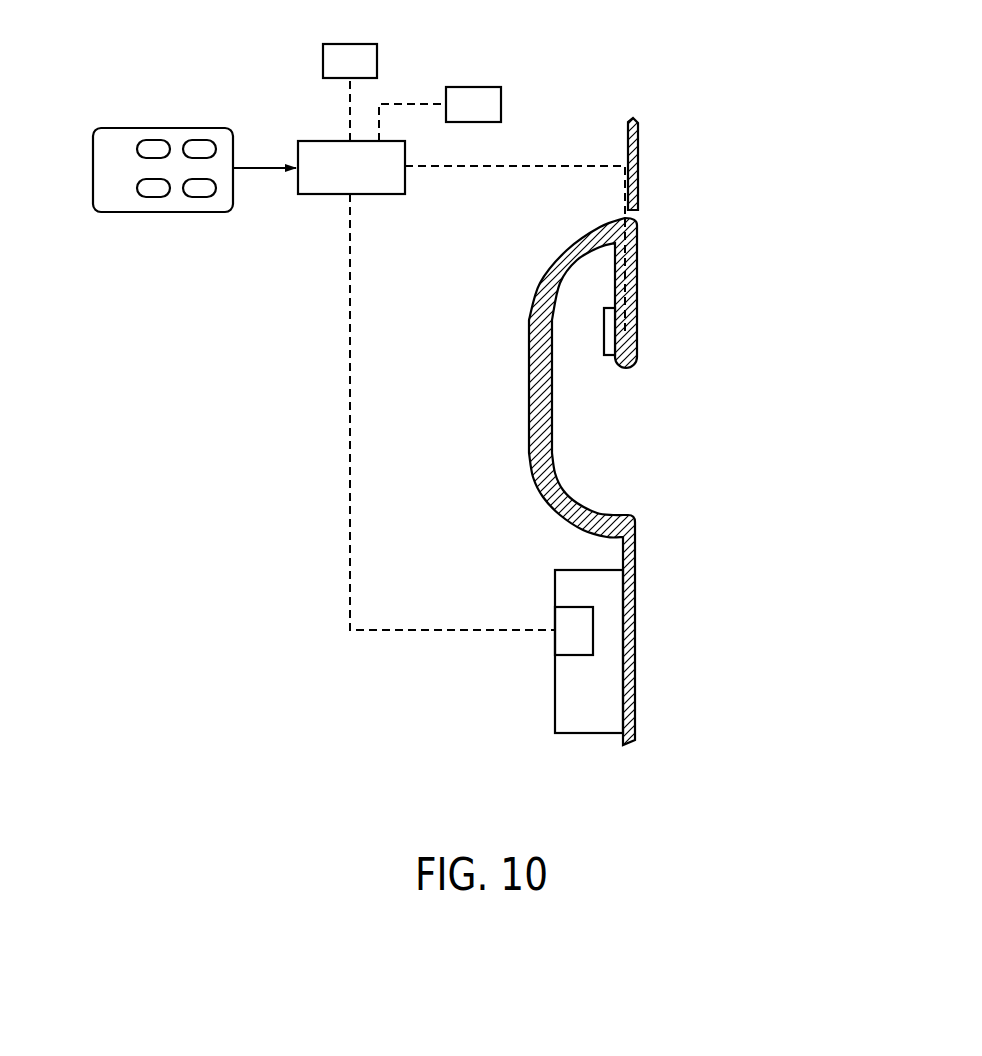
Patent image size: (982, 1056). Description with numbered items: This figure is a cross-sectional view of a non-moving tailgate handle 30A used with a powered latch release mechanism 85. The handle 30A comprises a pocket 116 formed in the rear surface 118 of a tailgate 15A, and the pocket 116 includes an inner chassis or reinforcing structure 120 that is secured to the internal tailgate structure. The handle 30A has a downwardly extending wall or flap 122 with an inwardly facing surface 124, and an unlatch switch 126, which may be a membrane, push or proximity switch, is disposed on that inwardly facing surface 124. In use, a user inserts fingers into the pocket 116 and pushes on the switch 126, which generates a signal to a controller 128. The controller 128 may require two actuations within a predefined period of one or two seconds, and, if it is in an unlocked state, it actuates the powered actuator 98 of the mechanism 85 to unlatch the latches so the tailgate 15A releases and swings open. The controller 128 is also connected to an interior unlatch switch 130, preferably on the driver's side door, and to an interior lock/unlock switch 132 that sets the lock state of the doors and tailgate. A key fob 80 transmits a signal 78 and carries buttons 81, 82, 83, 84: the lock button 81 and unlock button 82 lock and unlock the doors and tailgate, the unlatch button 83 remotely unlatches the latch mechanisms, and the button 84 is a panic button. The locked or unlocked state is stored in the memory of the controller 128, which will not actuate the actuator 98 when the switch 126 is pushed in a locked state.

The key fob 80 is at (96, 122).
The lock button 81 is at (200, 147).
The unlock button 82 is at (152, 146).
The unlatch button 83 is at (195, 197).
The panic button 84 is at (148, 195).
The signal 78 is at (260, 165).
The controller 128 is at (372, 180).
The unlatch switch 130 is at (377, 57).
The lock/unlock switch 132 is at (501, 100).
The inner chassis 120 is at (528, 340).
The flap 122 is at (638, 340).
The rear surface 118 is at (637, 560).
The inwardly facing surface 124 is at (610, 293).
The unlatch switch 126 is at (600, 343).
The pocket 116 is at (584, 428).
The tailgate handle 30A is at (677, 375).
The tailgate 15A is at (640, 647).
The powered latch release mechanism 85 is at (554, 685).
The powered actuator 98 is at (575, 612).